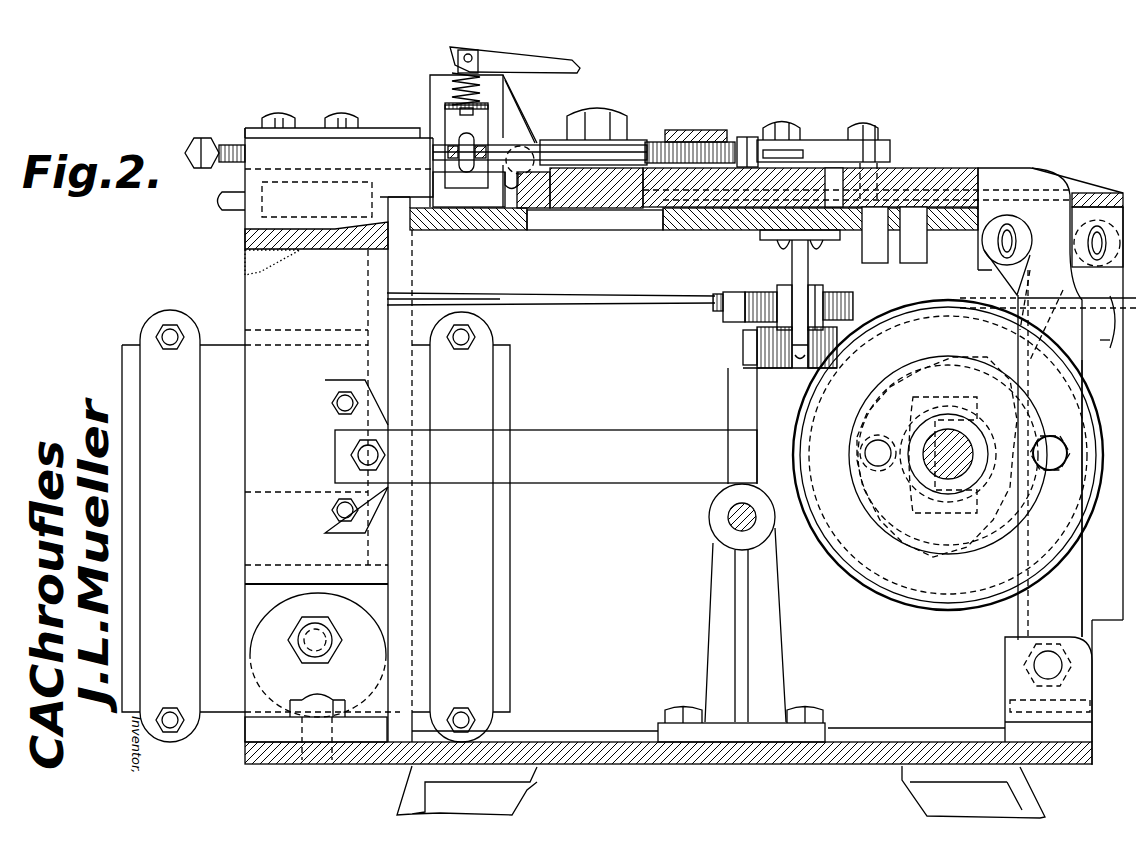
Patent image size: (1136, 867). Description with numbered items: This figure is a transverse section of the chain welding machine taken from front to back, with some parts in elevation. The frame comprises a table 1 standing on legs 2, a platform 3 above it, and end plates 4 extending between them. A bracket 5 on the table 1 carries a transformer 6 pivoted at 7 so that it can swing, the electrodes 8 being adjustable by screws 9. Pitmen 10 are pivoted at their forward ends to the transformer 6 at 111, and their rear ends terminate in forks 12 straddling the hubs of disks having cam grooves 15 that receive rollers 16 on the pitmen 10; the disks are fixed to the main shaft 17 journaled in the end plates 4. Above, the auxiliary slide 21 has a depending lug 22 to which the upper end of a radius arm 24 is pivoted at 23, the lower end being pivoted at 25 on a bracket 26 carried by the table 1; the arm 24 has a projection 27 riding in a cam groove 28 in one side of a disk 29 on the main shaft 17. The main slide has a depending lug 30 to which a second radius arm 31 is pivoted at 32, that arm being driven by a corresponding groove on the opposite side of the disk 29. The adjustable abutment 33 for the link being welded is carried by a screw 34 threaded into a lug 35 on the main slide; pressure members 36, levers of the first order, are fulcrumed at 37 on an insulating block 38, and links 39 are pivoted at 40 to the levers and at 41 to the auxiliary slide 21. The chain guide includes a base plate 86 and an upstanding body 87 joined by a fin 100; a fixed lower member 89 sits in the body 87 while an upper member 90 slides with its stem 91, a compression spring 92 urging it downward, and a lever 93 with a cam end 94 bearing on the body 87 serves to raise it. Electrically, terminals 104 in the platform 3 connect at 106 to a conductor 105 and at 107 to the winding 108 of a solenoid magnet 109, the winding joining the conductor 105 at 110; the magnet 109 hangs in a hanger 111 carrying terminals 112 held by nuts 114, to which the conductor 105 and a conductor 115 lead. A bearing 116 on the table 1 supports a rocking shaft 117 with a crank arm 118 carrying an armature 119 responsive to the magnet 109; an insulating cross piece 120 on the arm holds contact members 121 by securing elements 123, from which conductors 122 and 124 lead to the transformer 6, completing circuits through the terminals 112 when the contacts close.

The table 1 is at (613, 747).
The legs 2 is at (507, 790).
The platform 3 is at (703, 225).
The end plates 4 is at (873, 717).
The bracket 5 is at (250, 700).
The transformer 6 is at (238, 338).
The pivot 7 is at (317, 640).
The electrodes 8 is at (442, 142).
The screws 9 is at (192, 167).
The pitmen 10 is at (587, 473).
The forks 12 is at (937, 457).
The cam grooves 15 is at (827, 530).
The rollers 16 is at (847, 440).
The main shaft 17 is at (947, 430).
The auxiliary slide 21 is at (940, 168).
The depending lug 22 is at (985, 265).
The pivot 23 is at (1010, 243).
The radius arm 24 is at (1072, 603).
The pivot 25 is at (1050, 665).
The bracket 26 is at (1007, 692).
The projection 27 is at (1052, 453).
The cam groove 28 is at (923, 573).
The disk 29 is at (853, 580).
The depending lug 30 is at (1088, 208).
The radius arm 31 is at (1032, 313).
The pivot 32 is at (1087, 243).
The abutment 33 is at (620, 148).
The screw 34 is at (745, 133).
The lug 35 is at (697, 128).
The pressure members 36 is at (547, 143).
The fulcrum 37 is at (597, 120).
The block 38 is at (590, 212).
The links 39 is at (817, 147).
The pivot 40 is at (790, 125).
The pivot 41 is at (865, 125).
The base plate 86 is at (513, 203).
The upstanding body 87 is at (436, 80).
The fixed lower member 89 is at (463, 182).
The upper member 90 is at (488, 125).
The stem 91 is at (480, 62).
The compression spring 92 is at (443, 107).
The lever 93 is at (578, 62).
The cam end 94 is at (458, 78).
The fin 100 is at (508, 104).
The terminals 104 is at (889, 250).
The conductor 105 is at (1093, 300).
The connection 106 is at (834, 291).
The connection 107 is at (927, 267).
The winding 108 is at (783, 370).
The solenoid magnet 109 is at (753, 370).
The connection 110 is at (863, 320).
The hanger 111 is at (373, 455).
The terminals 112 is at (870, 272).
The nuts 114 is at (775, 283).
The conductor 115 is at (1103, 352).
The bearing 116 is at (773, 673).
The shaft 117 is at (730, 525).
The crank arm 118 is at (740, 407).
The armature 119 is at (663, 212).
The insulating cross piece 120 is at (748, 297).
The contact members 121 is at (760, 292).
The conductor 122 is at (570, 307).
The securing elements 123 is at (715, 314).
The conductor 124 is at (612, 286).